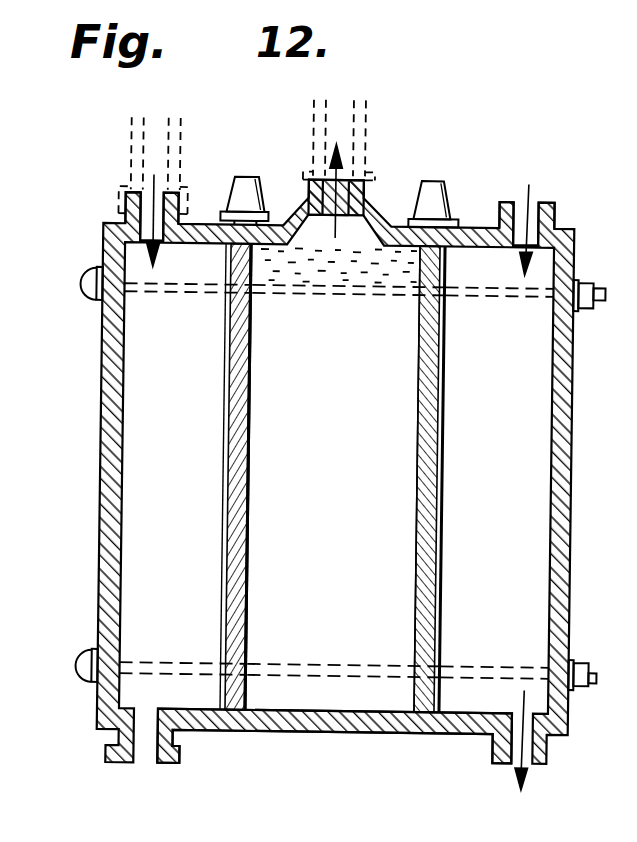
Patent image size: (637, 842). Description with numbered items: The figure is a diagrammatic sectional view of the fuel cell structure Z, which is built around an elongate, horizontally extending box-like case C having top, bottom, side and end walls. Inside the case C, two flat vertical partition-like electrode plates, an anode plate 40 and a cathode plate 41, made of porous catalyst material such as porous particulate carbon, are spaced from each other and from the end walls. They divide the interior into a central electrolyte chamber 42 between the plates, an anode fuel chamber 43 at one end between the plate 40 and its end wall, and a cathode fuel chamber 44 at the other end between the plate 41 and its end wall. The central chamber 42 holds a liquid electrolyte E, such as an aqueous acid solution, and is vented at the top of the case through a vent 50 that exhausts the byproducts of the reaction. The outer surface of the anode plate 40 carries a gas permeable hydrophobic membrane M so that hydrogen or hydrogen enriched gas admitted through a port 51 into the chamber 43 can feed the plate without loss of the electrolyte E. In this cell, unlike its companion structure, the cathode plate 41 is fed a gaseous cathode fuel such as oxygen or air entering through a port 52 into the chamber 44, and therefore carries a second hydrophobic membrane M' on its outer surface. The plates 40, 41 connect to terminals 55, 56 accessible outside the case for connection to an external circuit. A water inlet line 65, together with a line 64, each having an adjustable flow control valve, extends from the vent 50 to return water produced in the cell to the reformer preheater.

The case C is at (101, 470).
The fuel cell structure Z is at (362, 733).
The gas permeable hydrophobic membrane M is at (200, 476).
The gas permeable hydrophobic membrane M' is at (462, 479).
The anode electrode plate 40 is at (249, 566).
The cathode electrode plate 41 is at (418, 586).
The central electrolyte chamber 42 is at (346, 481).
The anode fuel chamber 43 is at (185, 479).
The cathode fuel chamber 44 is at (496, 482).
The liquid electrolyte E is at (338, 303).
The vent 50 is at (359, 194).
The port 51 is at (121, 210).
The port 52 is at (553, 209).
The terminal 55 is at (241, 178).
The terminal 56 is at (440, 183).
The line 64 is at (126, 141).
The water inlet line 65 is at (360, 102).